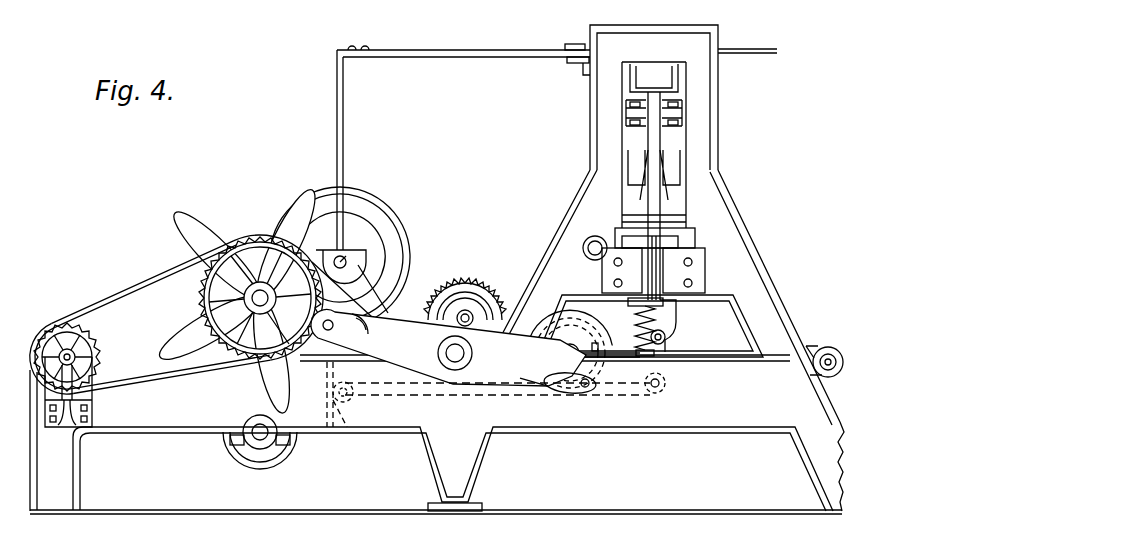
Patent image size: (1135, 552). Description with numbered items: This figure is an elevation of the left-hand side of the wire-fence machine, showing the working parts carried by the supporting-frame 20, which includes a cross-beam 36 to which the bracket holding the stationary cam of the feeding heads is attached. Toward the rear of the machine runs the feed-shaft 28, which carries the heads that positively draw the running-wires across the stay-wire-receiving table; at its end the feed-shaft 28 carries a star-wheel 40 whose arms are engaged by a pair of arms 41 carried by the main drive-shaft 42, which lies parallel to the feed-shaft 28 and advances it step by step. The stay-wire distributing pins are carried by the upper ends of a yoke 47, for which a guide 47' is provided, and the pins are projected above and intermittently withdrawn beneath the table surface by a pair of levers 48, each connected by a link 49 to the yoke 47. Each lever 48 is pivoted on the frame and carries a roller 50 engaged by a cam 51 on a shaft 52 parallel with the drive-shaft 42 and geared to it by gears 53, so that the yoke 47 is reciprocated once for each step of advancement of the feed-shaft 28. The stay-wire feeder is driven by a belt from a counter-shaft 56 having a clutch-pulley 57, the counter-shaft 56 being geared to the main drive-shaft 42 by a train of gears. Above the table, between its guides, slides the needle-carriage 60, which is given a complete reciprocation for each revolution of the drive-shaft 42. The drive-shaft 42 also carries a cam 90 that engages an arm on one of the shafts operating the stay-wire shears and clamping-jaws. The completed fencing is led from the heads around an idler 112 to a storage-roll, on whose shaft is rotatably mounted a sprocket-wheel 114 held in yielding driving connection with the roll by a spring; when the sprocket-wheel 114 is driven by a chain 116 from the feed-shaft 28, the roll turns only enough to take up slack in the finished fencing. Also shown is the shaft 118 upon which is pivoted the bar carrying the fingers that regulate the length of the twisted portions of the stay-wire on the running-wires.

The supporting-frame 20 is at (596, 180).
The feed-shaft 28 is at (258, 296).
The cross-beam 36 is at (346, 432).
The star-wheel 40 is at (295, 207).
The arms 41 is at (532, 380).
The main drive-shaft 42 is at (456, 371).
The yoke 47 is at (650, 326).
The guide 47' is at (677, 264).
The levers 48 is at (625, 388).
The link 49 is at (660, 346).
The roller 50 is at (575, 388).
The cam 51 is at (602, 338).
The shaft 52 is at (552, 337).
The gears 53 is at (491, 284).
The counter-shaft 56 is at (358, 253).
The clutch-pulley 57 is at (371, 210).
The needle-carriage 60 is at (676, 146).
The cam 90 is at (462, 306).
The idler 112 is at (263, 466).
The sprocket-wheel 114 is at (115, 347).
The chain 116 is at (135, 286).
The shaft 118 is at (589, 256).